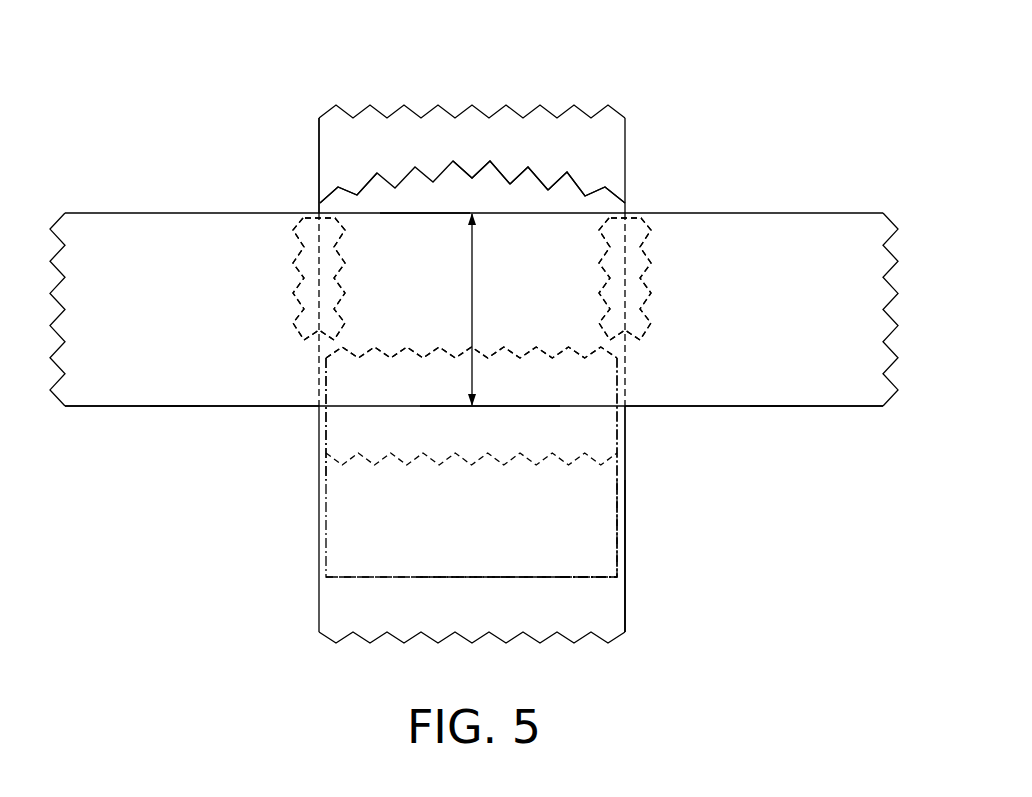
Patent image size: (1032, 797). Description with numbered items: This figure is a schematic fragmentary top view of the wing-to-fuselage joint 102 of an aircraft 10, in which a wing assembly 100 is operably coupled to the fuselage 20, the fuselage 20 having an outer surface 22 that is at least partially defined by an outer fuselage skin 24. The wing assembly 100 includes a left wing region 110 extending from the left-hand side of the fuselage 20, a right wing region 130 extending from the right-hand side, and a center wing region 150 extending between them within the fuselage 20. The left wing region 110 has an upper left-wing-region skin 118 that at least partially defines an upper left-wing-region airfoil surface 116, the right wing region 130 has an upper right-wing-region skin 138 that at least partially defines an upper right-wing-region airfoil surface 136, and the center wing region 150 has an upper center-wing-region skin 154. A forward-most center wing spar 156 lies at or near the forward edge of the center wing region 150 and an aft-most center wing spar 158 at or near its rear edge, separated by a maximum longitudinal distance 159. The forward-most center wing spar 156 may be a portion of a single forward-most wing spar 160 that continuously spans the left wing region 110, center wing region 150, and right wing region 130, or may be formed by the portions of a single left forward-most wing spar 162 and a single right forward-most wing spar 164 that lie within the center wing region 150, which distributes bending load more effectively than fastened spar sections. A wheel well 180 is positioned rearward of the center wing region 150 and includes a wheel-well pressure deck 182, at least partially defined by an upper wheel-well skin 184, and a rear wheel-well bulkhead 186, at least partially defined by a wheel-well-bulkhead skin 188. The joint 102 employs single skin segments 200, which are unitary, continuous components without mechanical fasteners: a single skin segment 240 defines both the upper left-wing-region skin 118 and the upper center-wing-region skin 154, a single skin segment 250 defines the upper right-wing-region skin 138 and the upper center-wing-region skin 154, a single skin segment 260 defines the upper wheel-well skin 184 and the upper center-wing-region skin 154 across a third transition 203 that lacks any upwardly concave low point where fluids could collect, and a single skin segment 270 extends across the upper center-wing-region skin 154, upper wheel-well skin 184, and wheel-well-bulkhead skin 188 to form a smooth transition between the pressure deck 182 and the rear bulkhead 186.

The aircraft 10 is at (163, 55).
The fuselage 20 is at (636, 456).
The outer surface 22 is at (630, 489).
The outer fuselage skin 24 is at (625, 530).
The wing assembly 100 is at (661, 181).
The wing-to-fuselage joint 102 is at (303, 198).
The left wing region 110 is at (190, 208).
The upper left-wing-region airfoil surface 116 is at (135, 405).
The upper left-wing-region skin 118 is at (208, 405).
The right wing region 130 is at (723, 206).
The upper right-wing-region airfoil surface 136 is at (738, 405).
The upper right-wing-region skin 138 is at (813, 405).
The center wing region 150 is at (386, 210).
The upper center-wing-region skin 154 is at (414, 227).
The forward-most center wing spar 156 is at (490, 212).
The aft-most center wing spar 158 is at (490, 407).
The maximum longitudinal distance 159 is at (474, 264).
The single forward-most wing spar 160 is at (526, 212).
The single left forward-most wing spar 162 is at (364, 212).
The single right forward-most wing spar 164 is at (571, 212).
The wheel well 180 is at (337, 527).
The wheel-well pressure deck 182 is at (597, 543).
The upper wheel-well skin 184 is at (595, 567).
The rear wheel-well bulkhead 186 is at (529, 582).
The wheel-well-bulkhead skin 188 is at (598, 578).
The single skin segment 200 is at (296, 254).
The third transition 203 is at (336, 422).
The single skin segment 240 is at (299, 306).
The single skin segment 250 is at (650, 256).
The single skin segment 260 is at (495, 349).
The single skin segment 270 is at (455, 578).